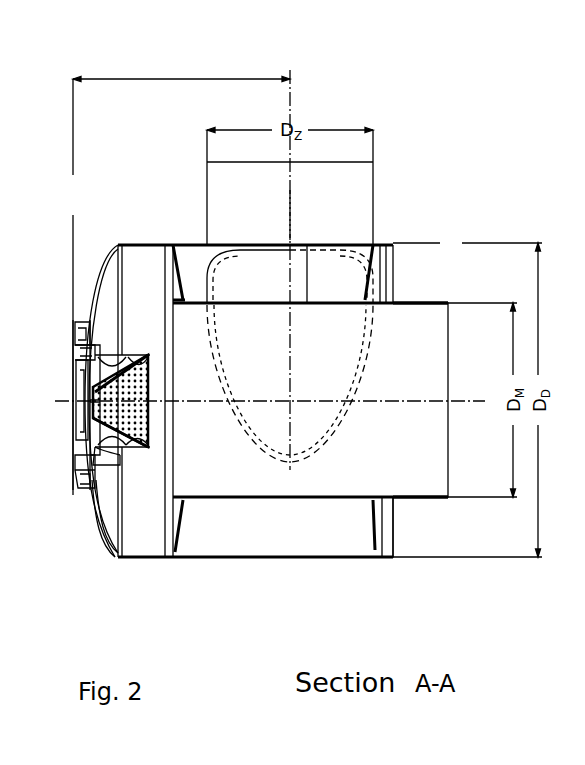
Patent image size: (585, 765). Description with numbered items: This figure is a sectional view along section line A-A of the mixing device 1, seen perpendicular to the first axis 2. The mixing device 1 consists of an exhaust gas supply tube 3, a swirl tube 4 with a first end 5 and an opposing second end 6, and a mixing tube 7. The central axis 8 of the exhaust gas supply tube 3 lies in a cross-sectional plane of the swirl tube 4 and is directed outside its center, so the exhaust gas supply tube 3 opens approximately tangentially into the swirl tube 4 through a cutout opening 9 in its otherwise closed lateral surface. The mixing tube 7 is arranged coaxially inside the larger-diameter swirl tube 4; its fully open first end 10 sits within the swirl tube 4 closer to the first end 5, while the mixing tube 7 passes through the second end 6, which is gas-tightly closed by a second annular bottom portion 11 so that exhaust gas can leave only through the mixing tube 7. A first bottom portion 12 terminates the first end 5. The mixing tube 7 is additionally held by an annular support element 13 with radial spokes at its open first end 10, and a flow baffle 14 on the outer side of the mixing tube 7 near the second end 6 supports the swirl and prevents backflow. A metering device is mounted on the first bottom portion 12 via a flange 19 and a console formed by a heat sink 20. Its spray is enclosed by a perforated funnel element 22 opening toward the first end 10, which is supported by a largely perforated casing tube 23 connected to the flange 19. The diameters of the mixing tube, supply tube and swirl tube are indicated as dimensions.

The mixing device 1 is at (470, 68).
The first axis 2 is at (55, 401).
The exhaust gas supply tube 3 is at (207, 192).
The swirl tube 4 is at (147, 243).
The first end 5 is at (97, 257).
The second end 6 is at (410, 231).
The mixing tube 7 is at (432, 300).
The central axis 8 is at (292, 213).
The cutout opening 9 is at (265, 385).
The first end of the mixing tube 10 is at (172, 480).
The second annular bottom portion 11 is at (373, 547).
The first bottom portion 12 is at (107, 545).
The annular support element 13 is at (177, 538).
The flow baffle 14 is at (326, 288).
The flange 19 is at (87, 496).
The heat sink 20 is at (75, 323).
The funnel element 22 is at (143, 358).
The casing tube 23 is at (118, 460).